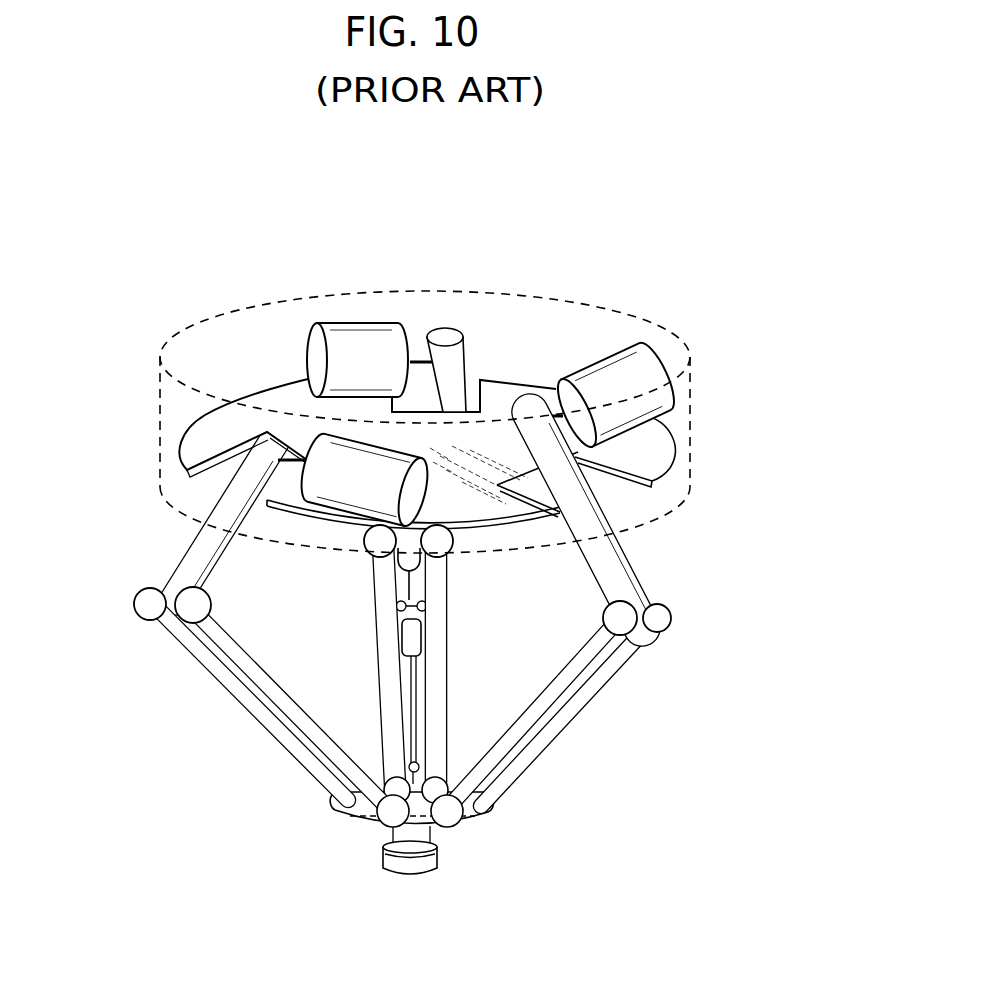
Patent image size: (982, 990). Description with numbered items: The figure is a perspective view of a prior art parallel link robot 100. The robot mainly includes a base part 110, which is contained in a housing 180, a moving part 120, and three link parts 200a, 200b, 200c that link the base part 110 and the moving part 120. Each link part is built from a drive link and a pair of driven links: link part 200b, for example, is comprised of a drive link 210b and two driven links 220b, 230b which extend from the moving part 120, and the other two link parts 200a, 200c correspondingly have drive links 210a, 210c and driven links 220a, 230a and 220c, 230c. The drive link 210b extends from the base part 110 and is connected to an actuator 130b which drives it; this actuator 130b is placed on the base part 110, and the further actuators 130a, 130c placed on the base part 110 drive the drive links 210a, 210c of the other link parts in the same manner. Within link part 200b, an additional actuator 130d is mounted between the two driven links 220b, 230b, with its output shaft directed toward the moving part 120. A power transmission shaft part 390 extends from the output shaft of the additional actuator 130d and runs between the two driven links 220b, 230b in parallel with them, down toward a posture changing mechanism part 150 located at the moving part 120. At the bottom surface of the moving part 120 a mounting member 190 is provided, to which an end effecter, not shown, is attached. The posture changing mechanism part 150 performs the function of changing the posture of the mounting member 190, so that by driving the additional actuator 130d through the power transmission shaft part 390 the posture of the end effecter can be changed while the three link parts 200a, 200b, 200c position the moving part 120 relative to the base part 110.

The parallel link robot 100 is at (283, 185).
The base part 110 is at (650, 440).
The moving part 120 is at (347, 812).
The actuator 130a is at (652, 368).
The actuator 130b is at (350, 337).
The actuator 130c is at (326, 448).
The additional actuator 130d is at (420, 640).
The posture changing mechanism part 150 is at (360, 823).
The housing 180 is at (695, 465).
The mounting member 190 is at (417, 873).
The link part 200a is at (661, 651).
The link part 200b is at (456, 575).
The link part 200c is at (133, 620).
The drive link 210a is at (625, 578).
The drive link 210b is at (447, 355).
The drive link 210c is at (240, 500).
The driven link 220a is at (530, 716).
The driven link 220b is at (433, 587).
The driven link 220c is at (242, 698).
The driven link 230a is at (602, 667).
The driven link 230b is at (385, 572).
The driven link 230c is at (262, 673).
The power transmission shaft part 390 is at (407, 693).